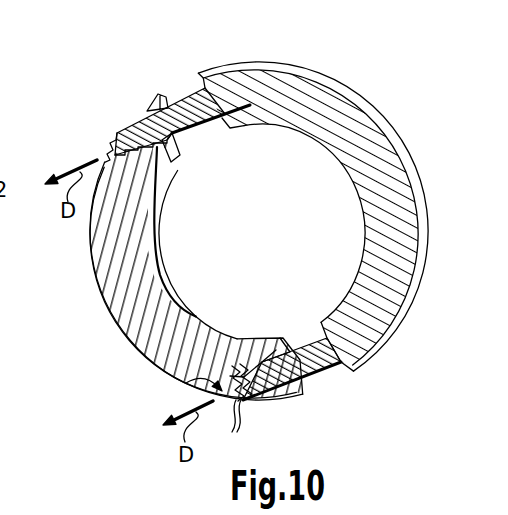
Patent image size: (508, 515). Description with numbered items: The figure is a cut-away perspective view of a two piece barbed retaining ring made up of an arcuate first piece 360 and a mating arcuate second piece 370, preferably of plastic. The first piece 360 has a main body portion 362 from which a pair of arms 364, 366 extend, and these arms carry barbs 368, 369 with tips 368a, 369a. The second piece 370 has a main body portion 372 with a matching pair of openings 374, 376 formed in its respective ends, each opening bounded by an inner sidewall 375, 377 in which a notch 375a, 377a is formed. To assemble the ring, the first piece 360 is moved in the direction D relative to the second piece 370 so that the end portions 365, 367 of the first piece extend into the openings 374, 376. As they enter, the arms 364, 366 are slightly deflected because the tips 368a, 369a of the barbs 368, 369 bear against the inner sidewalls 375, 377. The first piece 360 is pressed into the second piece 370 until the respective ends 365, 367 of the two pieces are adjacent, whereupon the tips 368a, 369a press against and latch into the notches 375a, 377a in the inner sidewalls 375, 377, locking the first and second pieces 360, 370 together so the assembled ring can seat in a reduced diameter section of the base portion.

The arcuate first piece 360 is at (254, 257).
The main body portion 362 is at (388, 173).
The arm 364 is at (183, 107).
The end portion 365 is at (134, 118).
The arm 366 is at (314, 352).
The end portion 367 is at (256, 358).
The barb 368 is at (206, 131).
The tip 368a is at (165, 142).
The barb 369 is at (250, 345).
The tip 369a is at (251, 356).
The arcuate second piece 370 is at (101, 307).
The main body portion 372 is at (137, 355).
The opening 374 is at (118, 135).
The inner sidewall 375 is at (152, 150).
The notch 375a is at (110, 147).
The opening 376 is at (186, 383).
The inner sidewall 377 is at (243, 362).
The notch 377a is at (244, 430).